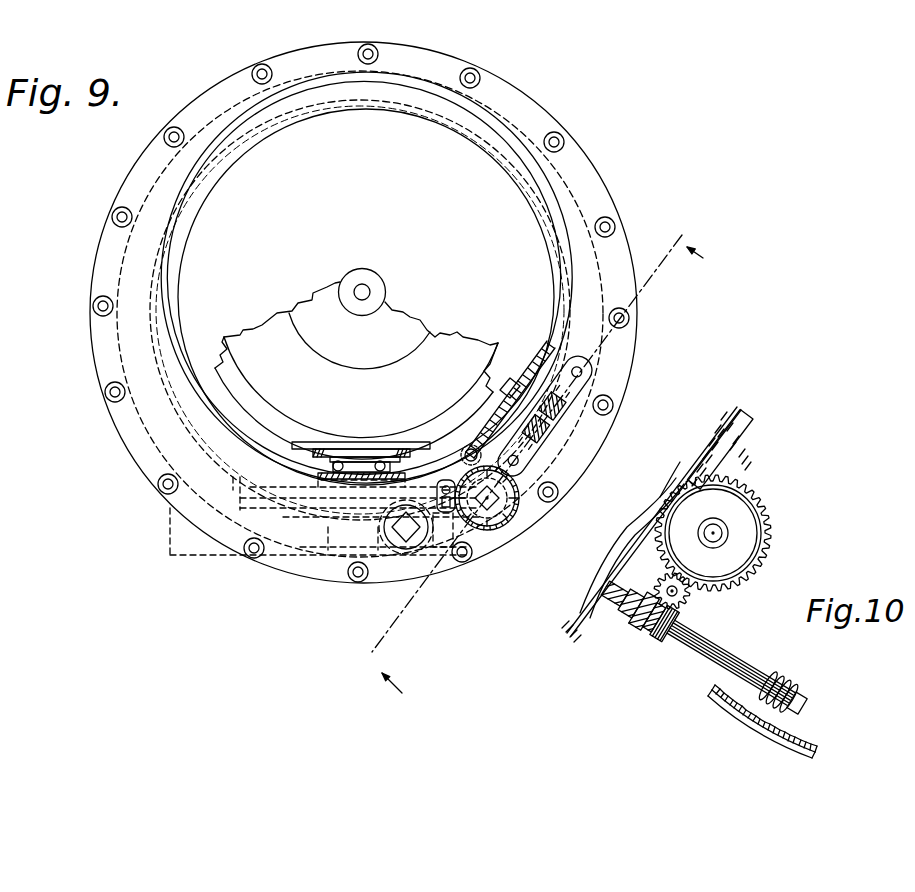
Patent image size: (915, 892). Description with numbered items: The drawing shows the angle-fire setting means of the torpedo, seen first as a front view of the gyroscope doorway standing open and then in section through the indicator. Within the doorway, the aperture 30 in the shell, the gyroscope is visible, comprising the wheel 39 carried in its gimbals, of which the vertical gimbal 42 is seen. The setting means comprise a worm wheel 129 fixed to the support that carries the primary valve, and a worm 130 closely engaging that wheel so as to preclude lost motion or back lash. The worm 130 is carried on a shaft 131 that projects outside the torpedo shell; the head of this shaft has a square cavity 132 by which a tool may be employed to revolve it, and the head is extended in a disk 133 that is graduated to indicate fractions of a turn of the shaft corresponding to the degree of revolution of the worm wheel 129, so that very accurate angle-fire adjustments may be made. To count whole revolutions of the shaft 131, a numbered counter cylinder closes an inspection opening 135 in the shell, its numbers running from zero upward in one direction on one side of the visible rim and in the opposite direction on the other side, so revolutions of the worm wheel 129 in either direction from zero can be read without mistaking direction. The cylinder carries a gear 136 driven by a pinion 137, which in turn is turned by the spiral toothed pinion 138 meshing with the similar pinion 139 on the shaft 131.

In FIG. 9, the aperture 30 is at (363, 312).
In FIG. 9, the gyroscope wheel 39 is at (356, 408).
In FIG. 9, the vertical gimbal 42 is at (262, 418).
In FIG. 9, the worm wheel 129 is at (250, 495).
In FIG. 10, the worm wheel 129 is at (808, 740).
In FIG. 10, the worm 130 is at (792, 699).
In FIG. 10, the shaft 131 is at (742, 663).
In FIG. 9, the square cavity 132 is at (488, 512).
In FIG. 10, the square cavity 132 is at (630, 558).
In FIG. 9, the graduated disk 133 is at (505, 518).
In FIG. 10, the graduated disk 133 is at (734, 742).
In FIG. 9, the inspection opening 135 is at (592, 385).
In FIG. 10, the inspection opening 135 is at (670, 487).
In FIG. 9, the gear 136 is at (535, 360).
In FIG. 10, the gear 136 is at (775, 549).
In FIG. 9, the pinion 137 is at (463, 450).
In FIG. 10, the pinion 137 is at (770, 526).
In FIG. 10, the spiral toothed pinion 138 is at (676, 600).
In FIG. 10, the spiral toothed pinion on shaft 139 is at (652, 628).